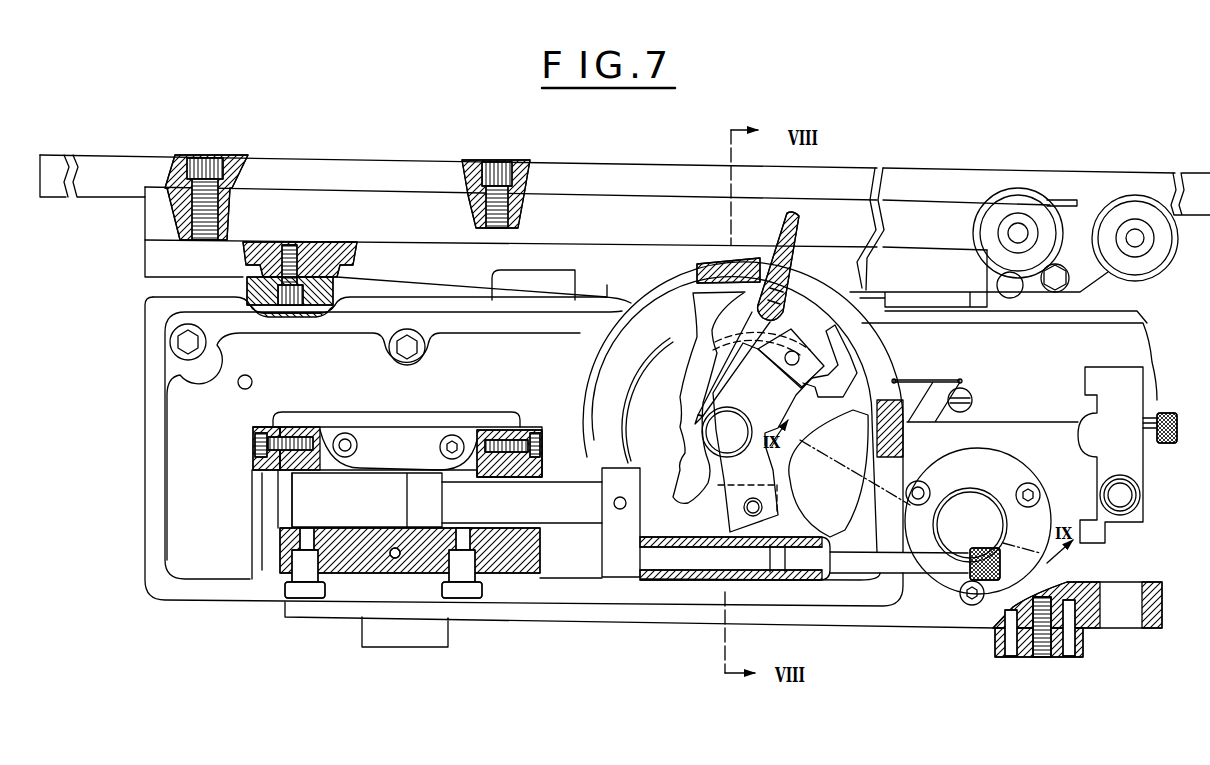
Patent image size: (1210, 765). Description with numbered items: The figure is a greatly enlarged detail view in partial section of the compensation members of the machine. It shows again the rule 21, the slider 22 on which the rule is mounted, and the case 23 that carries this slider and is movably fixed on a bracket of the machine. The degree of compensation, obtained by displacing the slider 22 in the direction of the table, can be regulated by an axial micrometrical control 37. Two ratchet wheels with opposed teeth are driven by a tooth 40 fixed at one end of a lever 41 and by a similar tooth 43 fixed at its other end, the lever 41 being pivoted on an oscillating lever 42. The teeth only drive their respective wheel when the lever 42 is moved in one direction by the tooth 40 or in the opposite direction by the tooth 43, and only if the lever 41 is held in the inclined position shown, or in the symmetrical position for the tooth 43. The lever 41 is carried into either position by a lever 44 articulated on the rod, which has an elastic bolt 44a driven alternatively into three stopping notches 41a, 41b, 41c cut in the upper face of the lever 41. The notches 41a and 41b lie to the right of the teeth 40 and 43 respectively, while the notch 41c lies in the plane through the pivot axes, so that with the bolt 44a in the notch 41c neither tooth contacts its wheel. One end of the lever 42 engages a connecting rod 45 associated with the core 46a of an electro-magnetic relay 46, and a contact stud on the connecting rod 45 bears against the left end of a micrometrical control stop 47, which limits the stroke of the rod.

The rule 21 is at (673, 166).
The slider 22 is at (160, 258).
The case 23 is at (150, 425).
The axial micrometrical control 37 is at (985, 512).
The tooth 40 is at (733, 368).
The lever 41 is at (832, 363).
The stopping notch 41a is at (748, 322).
The stopping notch 41b is at (823, 393).
The stopping notch 41c is at (808, 340).
The oscillating lever 42 is at (730, 392).
The tooth 43 is at (880, 375).
The lever 44 is at (800, 231).
The elastic bolt 44a is at (771, 300).
The connecting rod 45 is at (580, 517).
The electro-magnetic relay 46 is at (368, 548).
The core 46a is at (367, 500).
The micrometrical control stop 47 is at (913, 563).